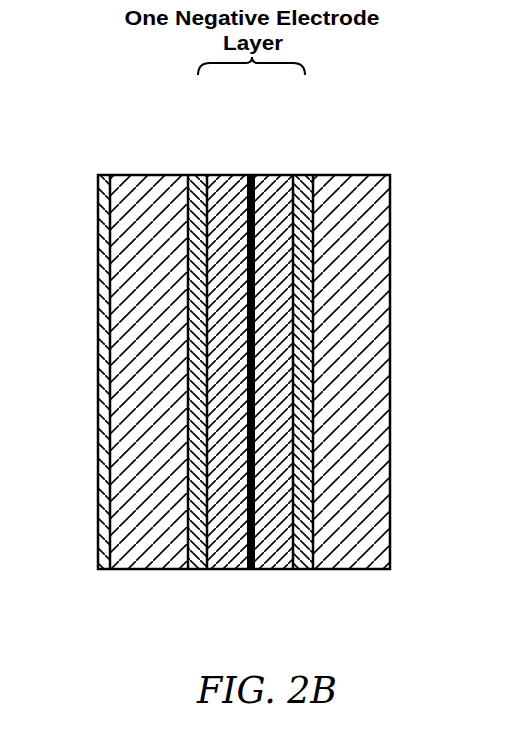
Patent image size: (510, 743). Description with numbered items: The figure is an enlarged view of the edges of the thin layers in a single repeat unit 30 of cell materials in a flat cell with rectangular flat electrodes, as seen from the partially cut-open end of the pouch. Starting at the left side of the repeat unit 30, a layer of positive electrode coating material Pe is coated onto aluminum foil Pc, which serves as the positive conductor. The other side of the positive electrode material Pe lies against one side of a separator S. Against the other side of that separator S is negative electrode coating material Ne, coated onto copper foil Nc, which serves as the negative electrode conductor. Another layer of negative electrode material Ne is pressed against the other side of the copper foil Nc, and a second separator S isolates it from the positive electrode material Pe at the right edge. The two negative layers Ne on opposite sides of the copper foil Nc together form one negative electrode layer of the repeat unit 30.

The repeat unit 30 is at (98, 580).
The aluminum foil Pc is at (104, 175).
The positive electrode coating material Pe is at (148, 175).
The separator S is at (198, 175).
The negative electrode coating material Ne is at (228, 175).
The copper foil Nc is at (252, 175).